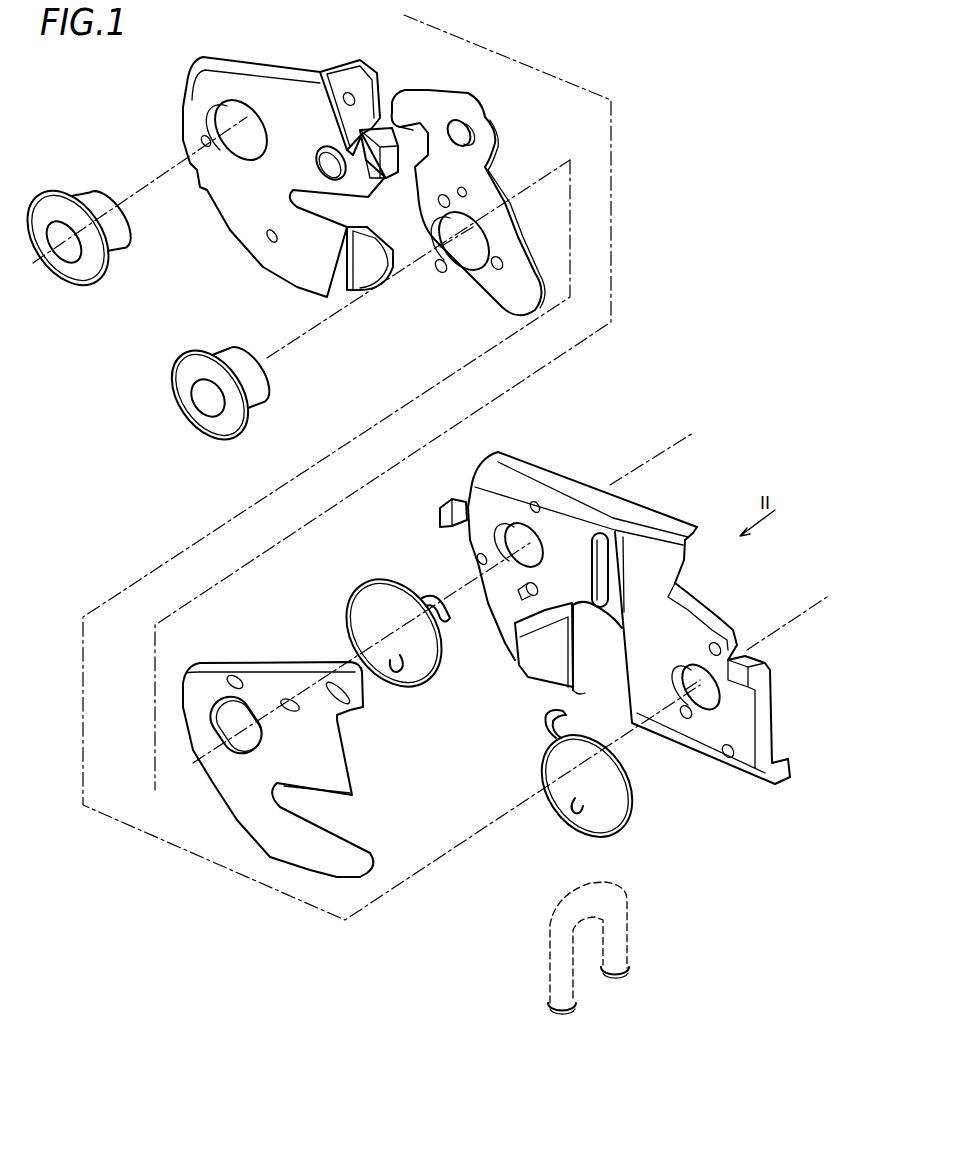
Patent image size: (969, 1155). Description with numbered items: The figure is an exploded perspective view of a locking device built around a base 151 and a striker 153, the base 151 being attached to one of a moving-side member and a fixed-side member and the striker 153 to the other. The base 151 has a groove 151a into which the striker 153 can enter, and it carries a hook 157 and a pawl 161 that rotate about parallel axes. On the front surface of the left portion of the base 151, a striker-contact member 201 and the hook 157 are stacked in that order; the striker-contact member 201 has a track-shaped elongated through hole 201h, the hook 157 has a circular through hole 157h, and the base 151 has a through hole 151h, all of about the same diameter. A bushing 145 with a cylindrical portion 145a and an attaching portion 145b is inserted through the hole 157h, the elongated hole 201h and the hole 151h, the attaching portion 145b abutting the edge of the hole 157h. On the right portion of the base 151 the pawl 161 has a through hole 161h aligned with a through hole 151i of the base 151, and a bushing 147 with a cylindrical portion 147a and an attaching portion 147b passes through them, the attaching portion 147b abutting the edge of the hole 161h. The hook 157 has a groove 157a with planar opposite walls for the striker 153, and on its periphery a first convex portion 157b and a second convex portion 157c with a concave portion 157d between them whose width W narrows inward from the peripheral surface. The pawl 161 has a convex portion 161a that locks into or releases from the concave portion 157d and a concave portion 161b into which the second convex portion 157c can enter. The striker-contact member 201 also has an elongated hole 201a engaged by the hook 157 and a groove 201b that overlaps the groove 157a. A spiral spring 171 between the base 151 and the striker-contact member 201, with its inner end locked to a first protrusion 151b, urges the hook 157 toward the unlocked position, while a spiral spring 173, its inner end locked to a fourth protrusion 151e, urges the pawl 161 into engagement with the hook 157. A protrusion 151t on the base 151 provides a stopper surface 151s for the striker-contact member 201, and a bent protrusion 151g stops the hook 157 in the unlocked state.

The bushing 145 is at (87, 213).
The cylindrical portion 145a is at (84, 200).
The attaching portion 145b is at (63, 205).
The bushing 147 is at (253, 394).
The cylindrical portion 147a is at (253, 386).
The attaching portion 147b is at (243, 426).
The hook 157 is at (298, 152).
The groove 157a is at (349, 226).
The first convex portion 157b is at (342, 92).
The second convex portion 157c is at (379, 176).
The concave portion 157d is at (358, 130).
The through hole 157h is at (228, 110).
The width W is at (379, 133).
The pawl 161 is at (468, 180).
The convex portion 161a is at (405, 112).
The concave portion 161b is at (432, 130).
The through hole 161h is at (468, 264).
The base 151 is at (600, 603).
The groove 151a is at (578, 686).
The first protrusion 151b is at (515, 598).
The fourth protrusion 151e is at (688, 722).
The bent protrusion 151g is at (455, 500).
The through hole 151h is at (510, 528).
The through hole 151i is at (700, 710).
The stopper surface 151s is at (598, 535).
The protrusion 151t is at (608, 533).
The spring 171 is at (443, 672).
The spring 173 is at (585, 735).
The striker-contact member 201 is at (289, 755).
The elongated hole 201a is at (350, 702).
The groove 201b is at (340, 833).
The elongated through hole 201h is at (220, 733).
The striker 153 is at (630, 917).